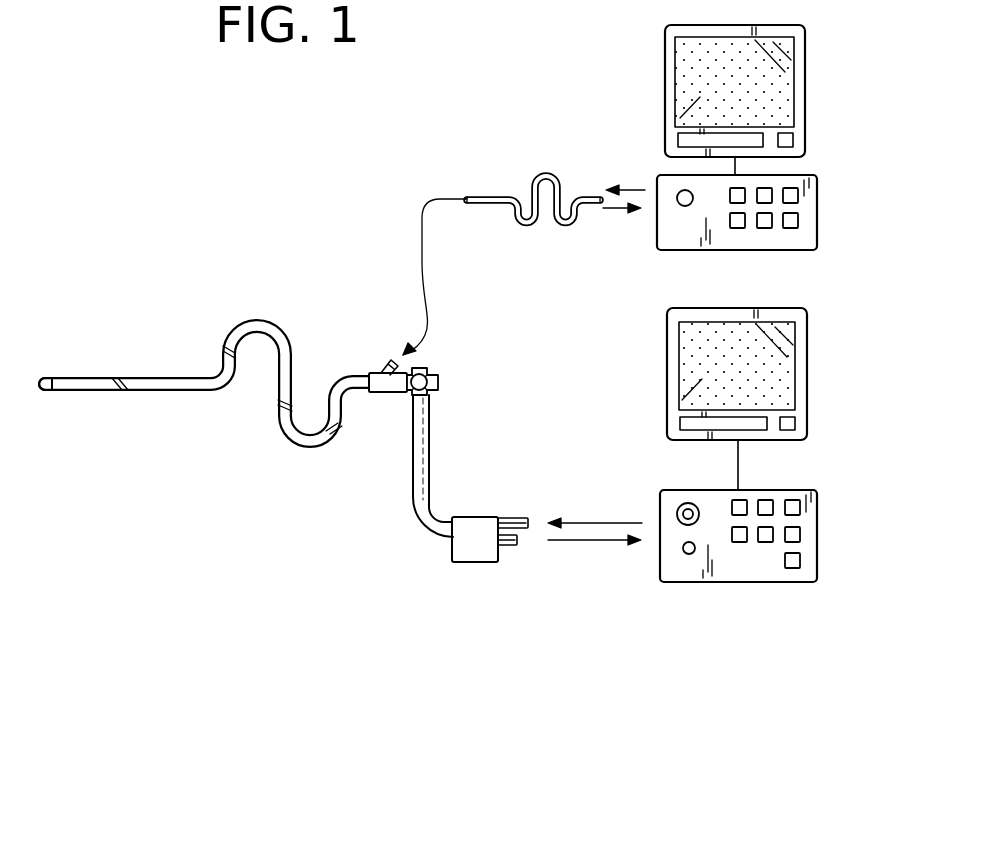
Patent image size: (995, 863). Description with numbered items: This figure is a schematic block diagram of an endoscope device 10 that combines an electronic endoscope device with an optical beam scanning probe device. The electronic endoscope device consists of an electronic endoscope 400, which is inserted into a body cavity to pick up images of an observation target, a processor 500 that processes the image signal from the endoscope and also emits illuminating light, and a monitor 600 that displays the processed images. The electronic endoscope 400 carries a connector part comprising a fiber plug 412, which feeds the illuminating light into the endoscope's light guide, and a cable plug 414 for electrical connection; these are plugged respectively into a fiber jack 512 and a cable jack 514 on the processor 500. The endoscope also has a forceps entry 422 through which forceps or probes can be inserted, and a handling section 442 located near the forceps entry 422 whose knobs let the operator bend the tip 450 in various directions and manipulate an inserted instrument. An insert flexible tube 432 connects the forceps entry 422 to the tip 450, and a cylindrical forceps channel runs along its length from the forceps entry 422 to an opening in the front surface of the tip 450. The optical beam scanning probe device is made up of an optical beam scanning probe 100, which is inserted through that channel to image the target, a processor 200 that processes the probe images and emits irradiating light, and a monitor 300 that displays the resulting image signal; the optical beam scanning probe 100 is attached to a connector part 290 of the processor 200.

The endoscope device 10 is at (304, 591).
The optical beam scanning probe 100 is at (528, 175).
The processor 200 is at (847, 218).
The connector part 290 is at (678, 202).
The monitor 300 is at (838, 99).
The electronic endoscope 400 is at (267, 473).
The fiber plug 412 is at (508, 517).
The cable plug 414 is at (512, 547).
The forceps entry 422 is at (378, 366).
The insert flexible tube 432 is at (230, 343).
The handling section 442 is at (430, 370).
The tip 450 is at (42, 390).
The processor 500 is at (853, 540).
The fiber jack 512 is at (677, 512).
The cable jack 514 is at (683, 553).
The monitor 600 is at (842, 382).